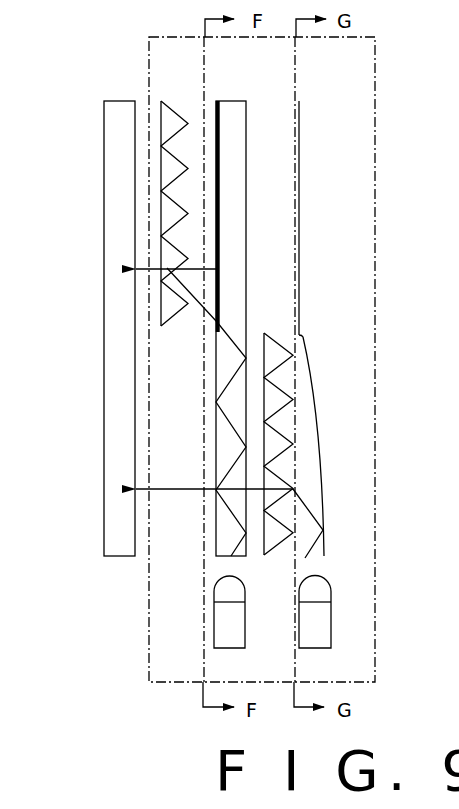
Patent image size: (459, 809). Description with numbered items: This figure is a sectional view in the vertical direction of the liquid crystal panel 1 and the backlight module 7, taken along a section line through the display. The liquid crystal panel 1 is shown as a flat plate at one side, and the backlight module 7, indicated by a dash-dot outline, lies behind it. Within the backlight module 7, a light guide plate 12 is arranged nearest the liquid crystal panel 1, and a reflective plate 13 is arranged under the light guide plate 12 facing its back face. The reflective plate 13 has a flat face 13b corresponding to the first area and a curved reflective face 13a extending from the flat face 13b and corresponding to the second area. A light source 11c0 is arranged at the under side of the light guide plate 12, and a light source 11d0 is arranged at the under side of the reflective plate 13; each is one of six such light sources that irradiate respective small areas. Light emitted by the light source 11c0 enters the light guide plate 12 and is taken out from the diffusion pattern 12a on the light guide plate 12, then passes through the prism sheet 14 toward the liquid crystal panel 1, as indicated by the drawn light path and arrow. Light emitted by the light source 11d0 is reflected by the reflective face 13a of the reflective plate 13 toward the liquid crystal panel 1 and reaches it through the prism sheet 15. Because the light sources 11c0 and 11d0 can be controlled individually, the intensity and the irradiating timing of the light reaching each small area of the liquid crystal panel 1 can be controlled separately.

The liquid crystal panel 1 is at (103, 255).
The backlight module 7 is at (149, 50).
The light source 11c0 is at (241, 626).
The light source 11d0 is at (327, 626).
The light guide plate 12 is at (288, 308).
The diffusion pattern 12a is at (220, 232).
The reflective plate 13 is at (314, 328).
The reflective face 13a is at (325, 485).
The flat face 13b is at (302, 273).
The prism sheet 14 is at (177, 110).
The prism sheet 15 is at (277, 340).